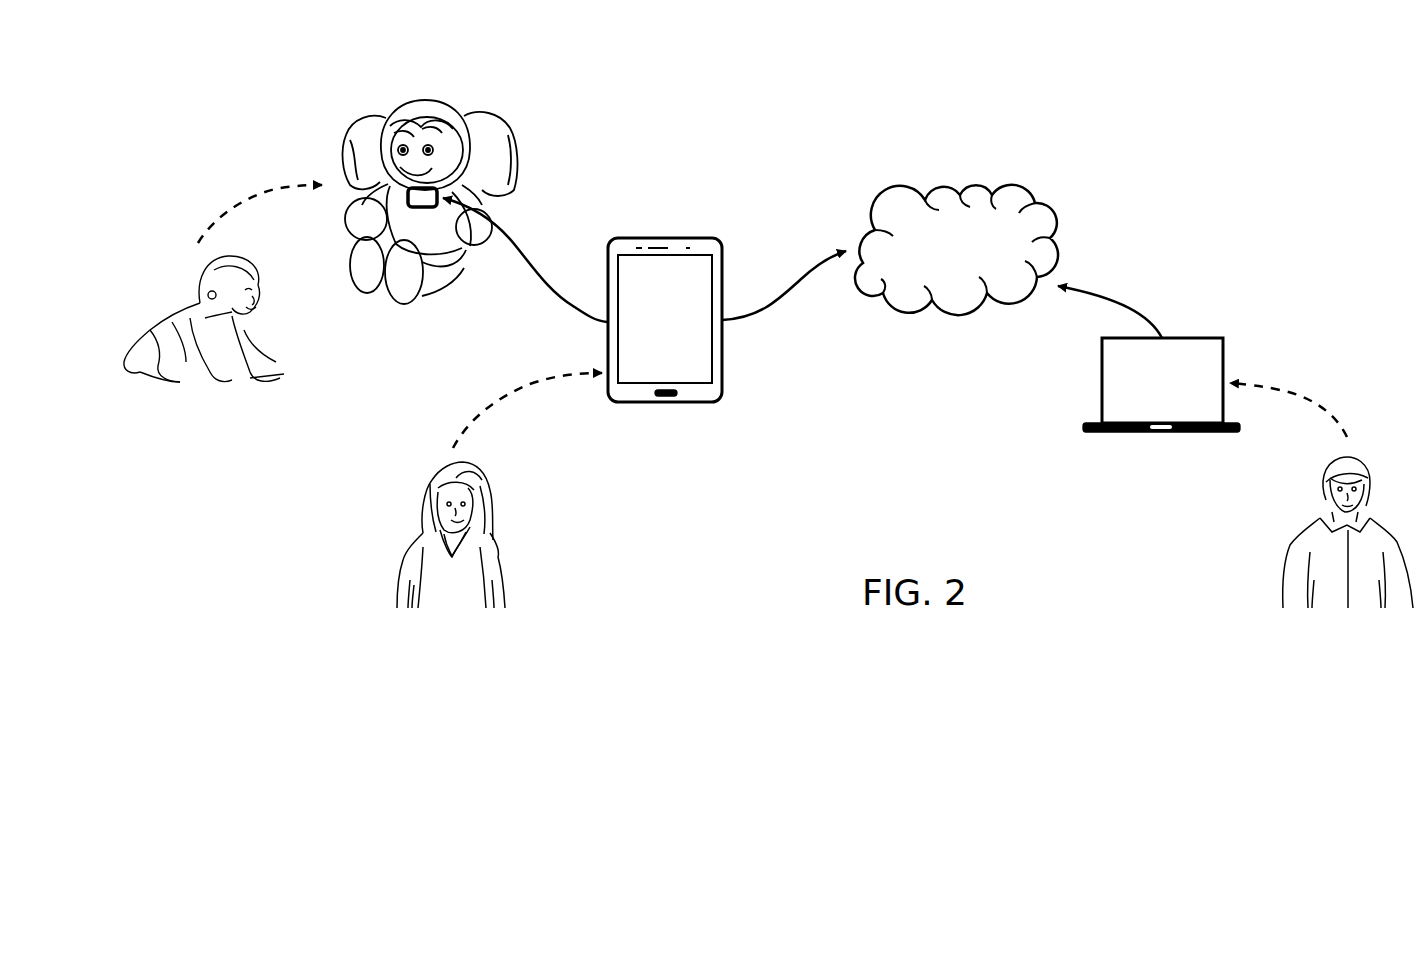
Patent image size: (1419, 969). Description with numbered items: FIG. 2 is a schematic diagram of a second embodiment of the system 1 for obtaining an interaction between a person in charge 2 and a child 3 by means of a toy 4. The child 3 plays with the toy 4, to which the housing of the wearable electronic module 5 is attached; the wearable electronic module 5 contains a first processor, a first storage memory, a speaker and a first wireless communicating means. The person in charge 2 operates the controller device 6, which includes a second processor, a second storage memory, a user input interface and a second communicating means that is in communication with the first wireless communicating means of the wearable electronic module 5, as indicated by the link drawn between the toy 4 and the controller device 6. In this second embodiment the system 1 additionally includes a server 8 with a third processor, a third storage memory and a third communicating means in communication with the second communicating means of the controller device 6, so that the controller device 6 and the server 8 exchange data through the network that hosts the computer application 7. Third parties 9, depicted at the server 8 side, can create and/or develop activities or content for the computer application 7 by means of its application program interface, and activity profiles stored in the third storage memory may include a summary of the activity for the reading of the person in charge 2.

The system 1 is at (615, 88).
The person in charge 2 is at (425, 533).
The child 3 is at (218, 334).
The toy 4 is at (413, 118).
The wearable electronic module 5 is at (442, 206).
The controller device 6 is at (710, 243).
The computer application 7 is at (984, 190).
The server 8 is at (1172, 346).
The third parties 9 is at (1367, 515).